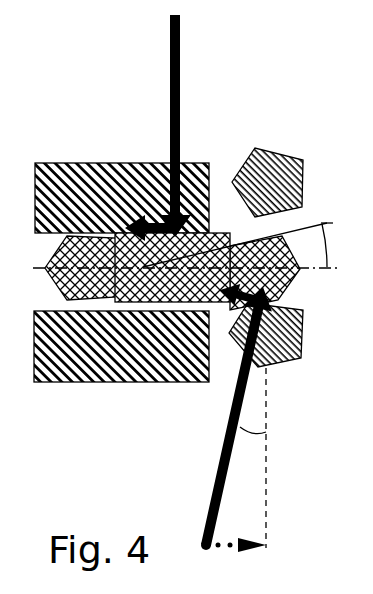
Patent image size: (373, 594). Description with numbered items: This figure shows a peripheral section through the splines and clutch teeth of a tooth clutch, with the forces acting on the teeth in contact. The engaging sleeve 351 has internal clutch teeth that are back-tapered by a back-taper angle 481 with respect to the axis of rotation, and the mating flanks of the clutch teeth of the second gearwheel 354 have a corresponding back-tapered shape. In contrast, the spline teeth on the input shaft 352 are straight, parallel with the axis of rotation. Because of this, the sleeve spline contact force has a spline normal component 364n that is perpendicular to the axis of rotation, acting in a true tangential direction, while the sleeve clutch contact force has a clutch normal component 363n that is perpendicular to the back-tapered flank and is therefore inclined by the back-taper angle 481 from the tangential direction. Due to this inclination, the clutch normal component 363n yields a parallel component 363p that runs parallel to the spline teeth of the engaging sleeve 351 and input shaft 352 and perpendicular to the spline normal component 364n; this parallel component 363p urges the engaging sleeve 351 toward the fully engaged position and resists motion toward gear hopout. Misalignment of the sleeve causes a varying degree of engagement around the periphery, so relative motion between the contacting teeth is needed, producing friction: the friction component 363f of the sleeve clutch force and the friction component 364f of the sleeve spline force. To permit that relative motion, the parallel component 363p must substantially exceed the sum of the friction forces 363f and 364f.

The engaging sleeve 351 is at (64, 195).
The input shaft 352 is at (88, 364).
The second gearwheel 354 is at (257, 183).
The spline normal component 364n is at (182, 58).
The friction component of the sleeve spline force 364f is at (137, 220).
The clutch normal component 363n is at (219, 477).
The friction component of the sleeve clutch force 363f is at (186, 369).
The parallel component 363p is at (252, 541).
The back-taper angle 481 is at (336, 250).